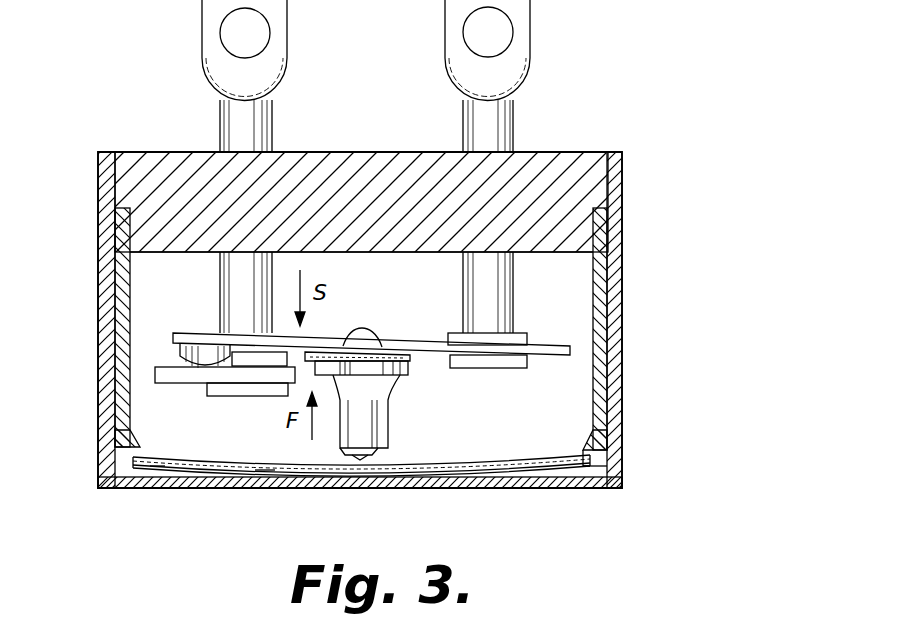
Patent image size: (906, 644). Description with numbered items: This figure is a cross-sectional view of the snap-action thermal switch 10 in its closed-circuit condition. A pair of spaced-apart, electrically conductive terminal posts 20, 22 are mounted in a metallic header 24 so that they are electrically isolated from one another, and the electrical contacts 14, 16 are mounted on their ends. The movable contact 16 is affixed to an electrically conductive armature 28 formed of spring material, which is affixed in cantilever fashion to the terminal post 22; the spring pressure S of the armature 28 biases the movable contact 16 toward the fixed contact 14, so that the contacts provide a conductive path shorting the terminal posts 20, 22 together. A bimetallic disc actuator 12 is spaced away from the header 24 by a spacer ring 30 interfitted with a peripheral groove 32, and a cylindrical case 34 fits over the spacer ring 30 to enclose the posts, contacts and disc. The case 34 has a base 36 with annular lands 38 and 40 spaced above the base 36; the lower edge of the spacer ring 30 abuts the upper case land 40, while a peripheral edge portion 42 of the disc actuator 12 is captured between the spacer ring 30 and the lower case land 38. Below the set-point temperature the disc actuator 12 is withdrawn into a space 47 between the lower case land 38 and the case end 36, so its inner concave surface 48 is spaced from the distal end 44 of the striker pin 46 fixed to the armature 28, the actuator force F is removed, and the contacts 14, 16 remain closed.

The snap-action thermal switch 10 is at (725, 152).
The bimetallic disc actuator 12 is at (206, 462).
The fixed contact 14 is at (155, 373).
The movable contact 16 is at (190, 332).
The terminal post 20 is at (246, 117).
The terminal post 22 is at (490, 122).
The header 24 is at (555, 151).
The armature 28 is at (420, 356).
The spacer ring 30 is at (593, 287).
The peripheral groove 32 is at (607, 210).
The cylindrical case 34 is at (620, 342).
The base 36 is at (493, 489).
The lower case land 38 is at (592, 489).
The upper case land 40 is at (612, 424).
The peripheral edge portion 42 is at (140, 455).
The distal end 44 is at (362, 462).
The striker pin 46 is at (388, 436).
The space 47 is at (156, 489).
The inner concave surface 48 is at (266, 489).